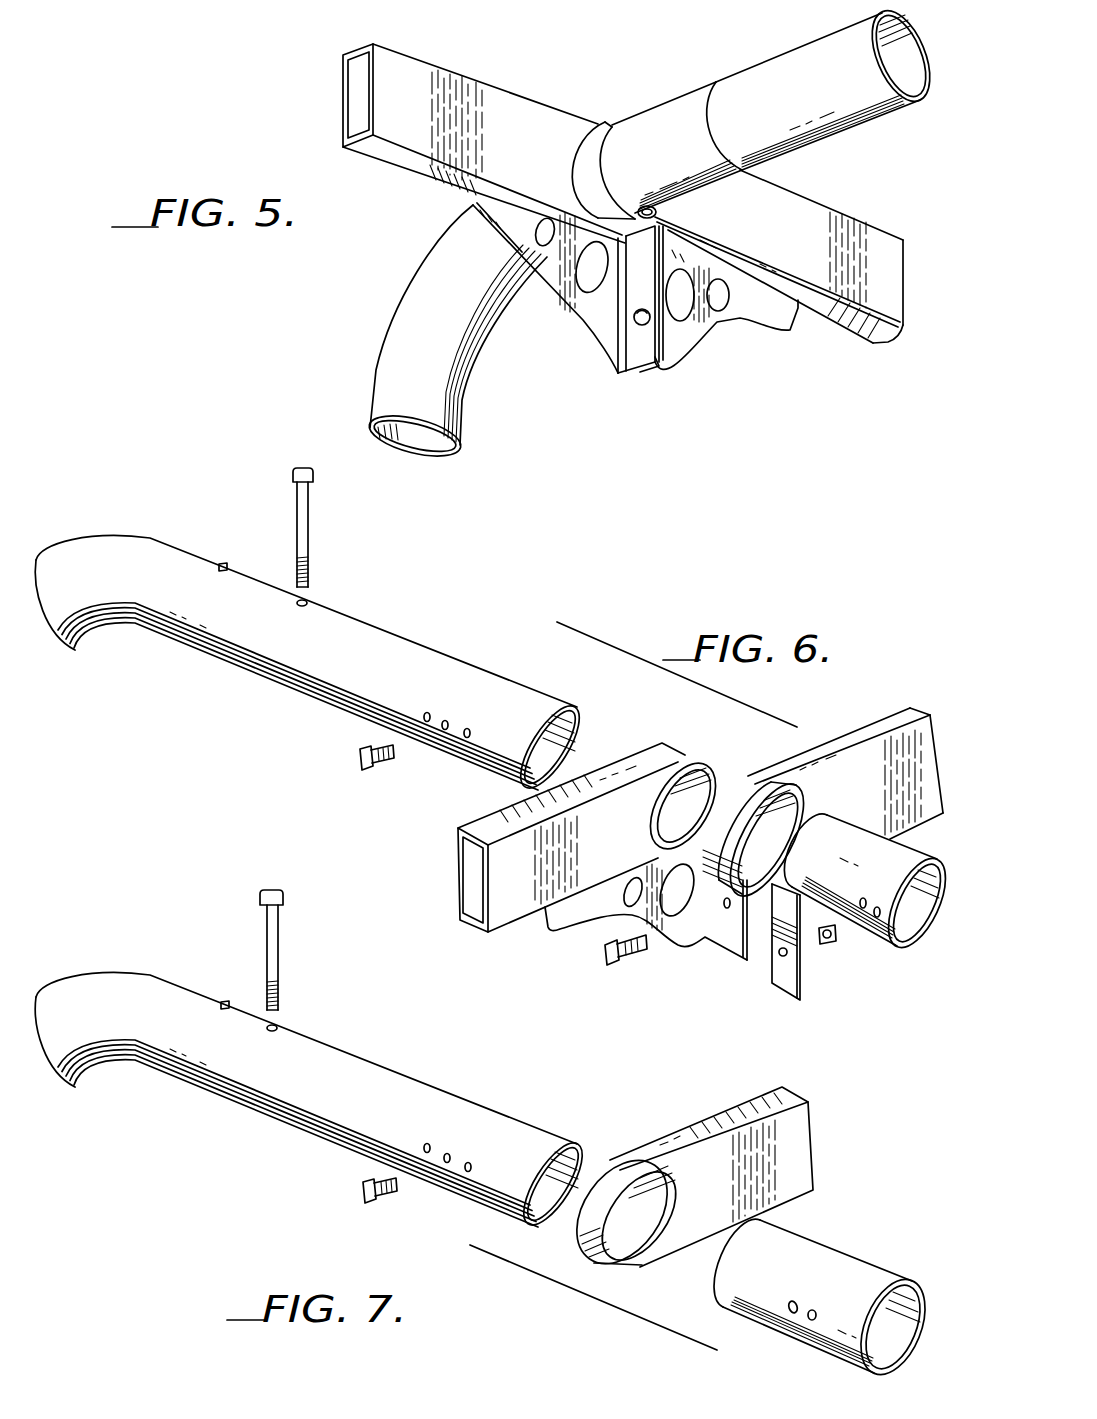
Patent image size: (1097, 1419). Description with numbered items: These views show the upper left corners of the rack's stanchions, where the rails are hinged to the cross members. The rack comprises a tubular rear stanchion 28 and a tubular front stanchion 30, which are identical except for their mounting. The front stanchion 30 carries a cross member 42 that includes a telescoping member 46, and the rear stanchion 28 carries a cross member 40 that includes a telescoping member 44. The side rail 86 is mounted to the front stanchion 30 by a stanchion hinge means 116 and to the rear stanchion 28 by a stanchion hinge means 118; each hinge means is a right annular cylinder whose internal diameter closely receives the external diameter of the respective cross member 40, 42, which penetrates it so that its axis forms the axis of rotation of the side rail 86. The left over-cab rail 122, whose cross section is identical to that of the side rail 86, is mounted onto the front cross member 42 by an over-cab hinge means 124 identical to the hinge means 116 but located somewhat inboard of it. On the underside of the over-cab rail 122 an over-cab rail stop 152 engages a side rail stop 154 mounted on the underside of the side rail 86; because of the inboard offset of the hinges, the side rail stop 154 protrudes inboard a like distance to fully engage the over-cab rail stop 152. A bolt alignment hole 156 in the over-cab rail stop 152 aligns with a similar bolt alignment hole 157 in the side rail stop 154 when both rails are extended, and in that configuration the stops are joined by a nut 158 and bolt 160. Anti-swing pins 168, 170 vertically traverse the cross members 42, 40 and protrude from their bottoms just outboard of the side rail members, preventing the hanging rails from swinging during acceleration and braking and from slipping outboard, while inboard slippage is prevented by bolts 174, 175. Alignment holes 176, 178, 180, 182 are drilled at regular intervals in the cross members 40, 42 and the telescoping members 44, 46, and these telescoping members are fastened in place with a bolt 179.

In FIG. 7, the rear stanchion 28 is at (127, 968).
In FIG. 5, the front stanchion 30 is at (394, 327).
In FIG. 6, the front stanchion 30 is at (137, 527).
In FIG. 7, the cross member 40 is at (383, 1068).
In FIG. 5, the cross member 42 is at (662, 113).
In FIG. 6, the cross member 42 is at (363, 623).
In FIG. 7, the telescoping member 44 is at (827, 1252).
In FIG. 5, the telescoping member 46 is at (788, 52).
In FIG. 6, the telescoping member 46 is at (855, 805).
In FIG. 5, the side rail 86 is at (458, 82).
In FIG. 6, the side rail 86 is at (475, 822).
In FIG. 7, the side rail 86 is at (683, 1130).
In FIG. 6, the stanchion hinge means 116 is at (687, 748).
In FIG. 7, the stanchion hinge means 118 is at (575, 1240).
In FIG. 5, the left over-cab rail 122 is at (820, 210).
In FIG. 6, the left over-cab rail 122 is at (875, 730).
In FIG. 5, the over-cab hinge means 124 is at (601, 122).
In FIG. 6, the over-cab hinge means 124 is at (745, 782).
In FIG. 5, the over-cab rail stop 152 is at (687, 338).
In FIG. 6, the over-cab rail stop 152 is at (782, 985).
In FIG. 5, the side rail stop 154 is at (583, 322).
In FIG. 6, the side rail stop 154 is at (590, 916).
In FIG. 6, the bolt alignment hole 156 is at (781, 956).
In FIG. 6, the bolt alignment hole 157 is at (716, 898).
In FIG. 6, the nut 158 is at (833, 945).
In FIG. 5, the bolt 160 is at (634, 321).
In FIG. 6, the bolt 160 is at (605, 960).
In FIG. 6, the anti-swing pin 168 is at (223, 562).
In FIG. 7, the anti-swing pin 170 is at (225, 1000).
In FIG. 5, the bolt 174 is at (637, 203).
In FIG. 6, the bolt 174 is at (311, 518).
In FIG. 7, the bolt 175 is at (279, 957).
In FIG. 6, the alignment hole 176 is at (423, 713).
In FIG. 6, the alignment hole 178 is at (865, 908).
In FIG. 6, the bolt 179 is at (358, 754).
In FIG. 7, the bolt 179 is at (361, 1190).
In FIG. 7, the alignment hole 180 is at (427, 1145).
In FIG. 7, the alignment hole 182 is at (793, 1300).